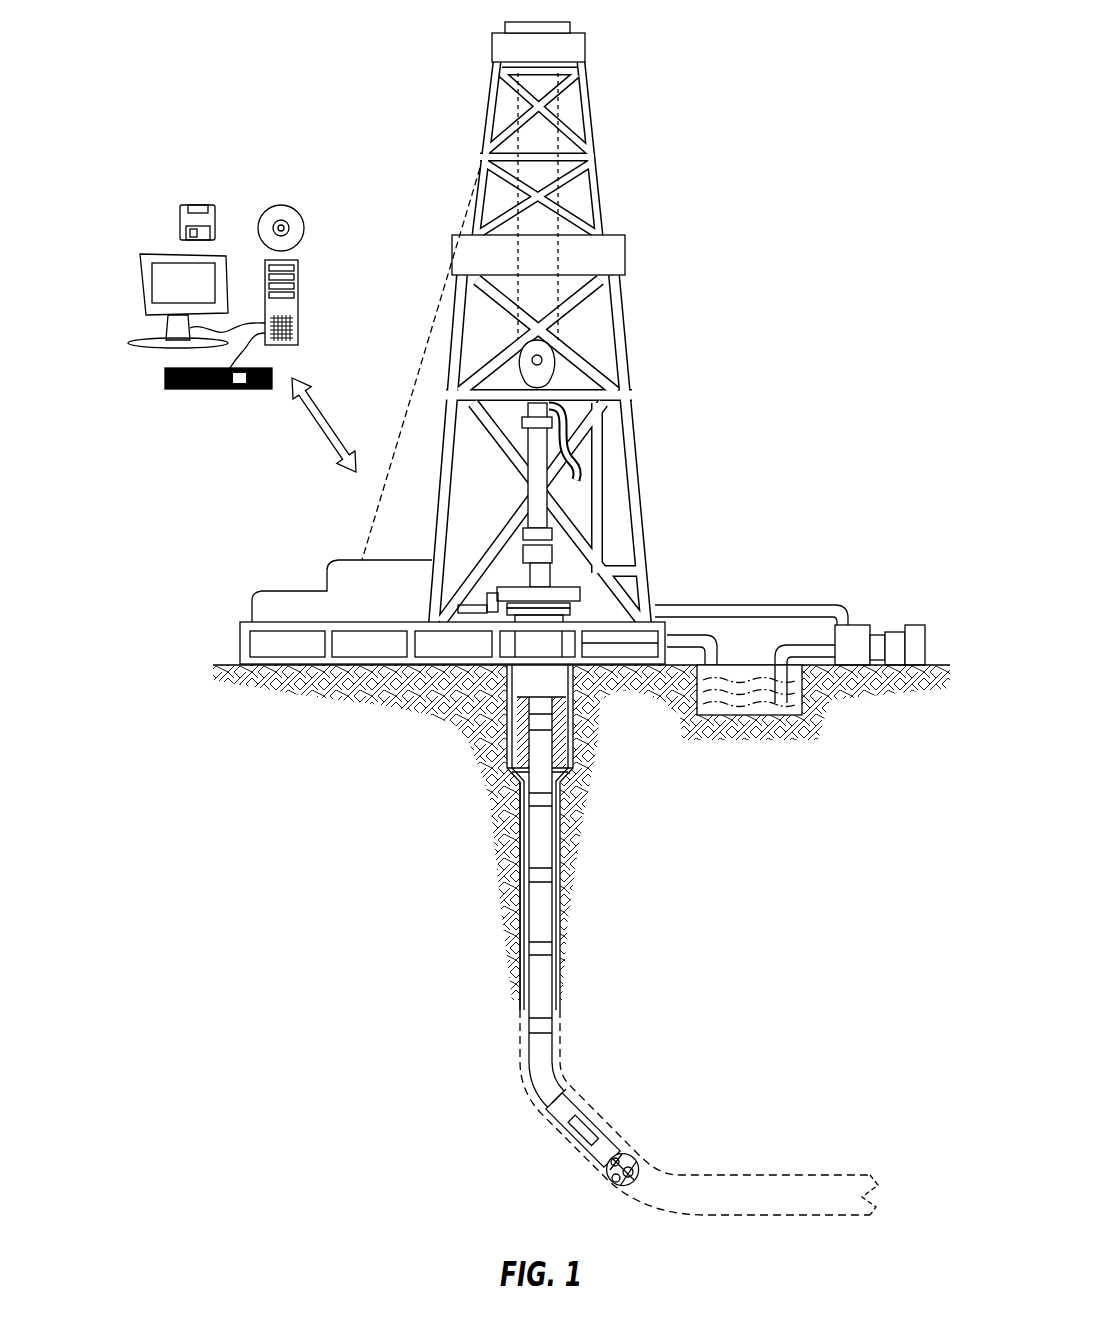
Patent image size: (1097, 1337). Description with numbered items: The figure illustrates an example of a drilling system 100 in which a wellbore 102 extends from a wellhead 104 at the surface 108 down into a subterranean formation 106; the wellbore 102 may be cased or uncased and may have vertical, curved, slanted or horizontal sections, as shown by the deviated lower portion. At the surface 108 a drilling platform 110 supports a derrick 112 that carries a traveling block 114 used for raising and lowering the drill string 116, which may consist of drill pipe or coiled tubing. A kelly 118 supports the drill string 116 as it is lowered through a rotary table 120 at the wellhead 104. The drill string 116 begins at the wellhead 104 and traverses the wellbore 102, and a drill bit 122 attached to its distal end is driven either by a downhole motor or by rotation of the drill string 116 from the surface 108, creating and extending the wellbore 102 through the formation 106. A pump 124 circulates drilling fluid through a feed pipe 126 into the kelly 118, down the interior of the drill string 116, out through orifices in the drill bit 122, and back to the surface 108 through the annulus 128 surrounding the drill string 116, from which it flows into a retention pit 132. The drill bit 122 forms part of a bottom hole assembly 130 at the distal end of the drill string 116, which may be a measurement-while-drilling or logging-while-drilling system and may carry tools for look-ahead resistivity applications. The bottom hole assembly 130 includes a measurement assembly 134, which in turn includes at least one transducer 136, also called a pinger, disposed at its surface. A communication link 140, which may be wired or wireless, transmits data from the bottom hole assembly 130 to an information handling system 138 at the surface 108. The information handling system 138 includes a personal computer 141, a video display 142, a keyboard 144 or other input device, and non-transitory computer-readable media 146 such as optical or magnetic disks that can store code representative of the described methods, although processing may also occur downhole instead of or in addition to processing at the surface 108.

The drilling system 100 is at (858, 126).
The wellbore 102 is at (560, 870).
The wellhead 104 is at (584, 609).
The subterranean formation 106 is at (788, 964).
The surface 108 is at (933, 665).
The drilling platform 110 is at (240, 646).
The derrick 112 is at (598, 173).
The traveling block 114 is at (560, 365).
The drill string 116 is at (553, 853).
The kelly 118 is at (538, 448).
The rotary table 120 is at (575, 578).
The drill bit 122 is at (640, 1163).
The pump 124 is at (858, 625).
The feed pipe 126 is at (775, 605).
The annulus 128 is at (521, 870).
The bottom hole assembly 130 is at (546, 1130).
The retention pit 132 is at (745, 702).
The measurement assembly 134 is at (580, 1099).
The transducer 136 is at (589, 1140).
The information handling system 138 is at (147, 190).
The communication link 140 is at (312, 430).
The personal computer 141 is at (300, 279).
The video display 142 is at (147, 295).
The keyboard 144 is at (177, 392).
The non-transitory computer-readable media 146 is at (280, 205).